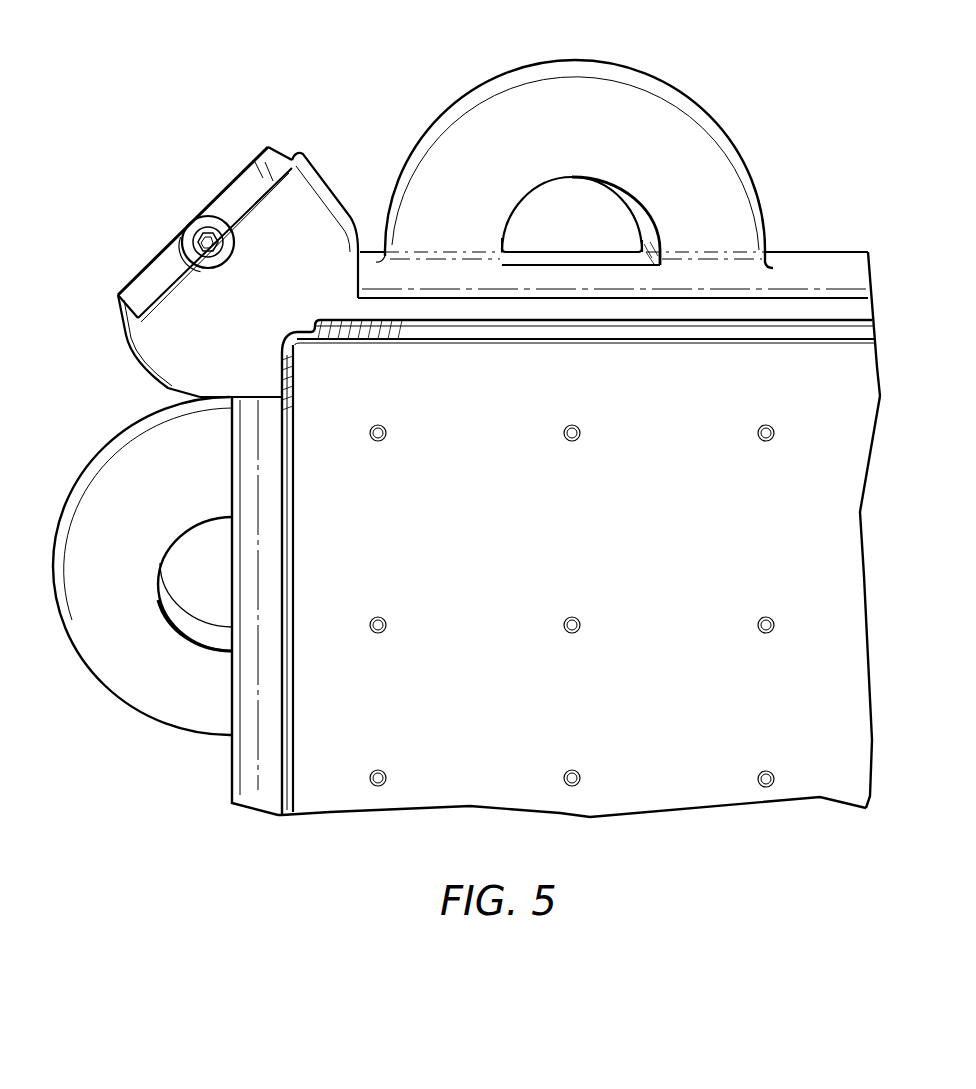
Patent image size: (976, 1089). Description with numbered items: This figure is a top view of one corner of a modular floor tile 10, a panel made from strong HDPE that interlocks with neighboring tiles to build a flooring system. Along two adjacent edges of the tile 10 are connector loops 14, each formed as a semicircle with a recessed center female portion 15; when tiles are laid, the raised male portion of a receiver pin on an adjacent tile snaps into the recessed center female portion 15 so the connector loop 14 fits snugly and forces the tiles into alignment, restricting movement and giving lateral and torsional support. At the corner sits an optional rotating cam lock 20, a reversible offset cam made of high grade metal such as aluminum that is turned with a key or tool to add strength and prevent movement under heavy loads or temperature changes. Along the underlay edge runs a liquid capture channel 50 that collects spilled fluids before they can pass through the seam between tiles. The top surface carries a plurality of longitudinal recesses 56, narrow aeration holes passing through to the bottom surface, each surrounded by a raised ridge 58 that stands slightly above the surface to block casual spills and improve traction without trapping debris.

The modular floor tile 10 is at (762, 82).
The connector loop 14 is at (587, 143).
The recessed center female portion 15 is at (541, 220).
The cam lock 20 is at (294, 254).
The liquid capture channel 50 is at (514, 328).
The longitudinal recess 56 is at (576, 442).
The raised ridge 58 is at (388, 437).